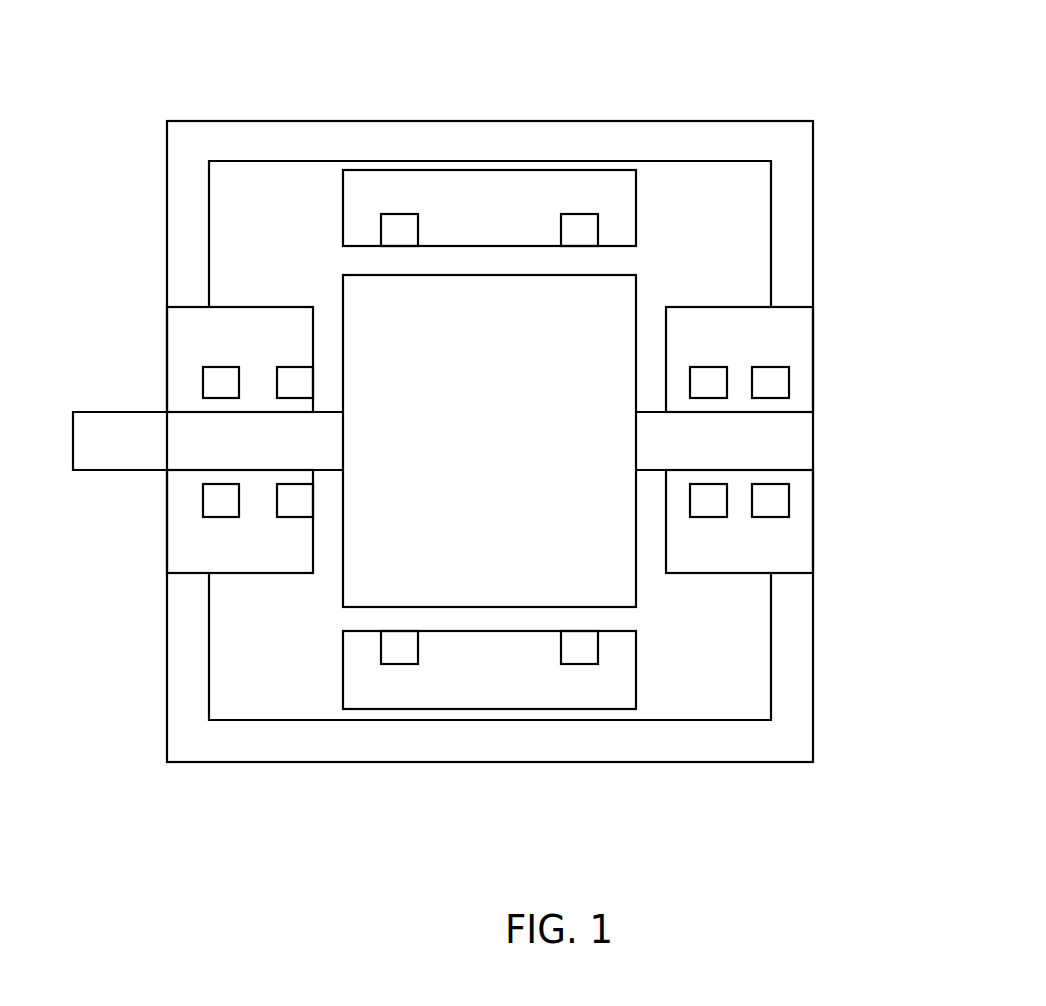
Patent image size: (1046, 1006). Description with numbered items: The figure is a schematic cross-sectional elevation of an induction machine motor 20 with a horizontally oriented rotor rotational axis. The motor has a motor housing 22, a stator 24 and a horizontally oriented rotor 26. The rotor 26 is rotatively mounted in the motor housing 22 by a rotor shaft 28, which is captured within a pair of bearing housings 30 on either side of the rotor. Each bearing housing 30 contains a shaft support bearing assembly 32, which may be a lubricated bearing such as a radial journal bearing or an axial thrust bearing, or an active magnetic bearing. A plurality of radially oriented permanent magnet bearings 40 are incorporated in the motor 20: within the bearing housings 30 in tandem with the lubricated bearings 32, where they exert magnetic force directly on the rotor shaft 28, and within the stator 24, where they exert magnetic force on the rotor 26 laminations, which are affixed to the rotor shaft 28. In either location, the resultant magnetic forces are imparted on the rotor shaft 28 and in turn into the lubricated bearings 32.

The induction machine motor 20 is at (290, 822).
The motor housing 22 is at (718, 742).
The stator 24 is at (646, 682).
The rotor 26 is at (677, 278).
The rotor shaft 28 is at (119, 458).
The bearing housing 30 is at (154, 360).
The shaft support bearing assembly 32 is at (297, 378).
The permanent magnet bearing 40 is at (580, 228).